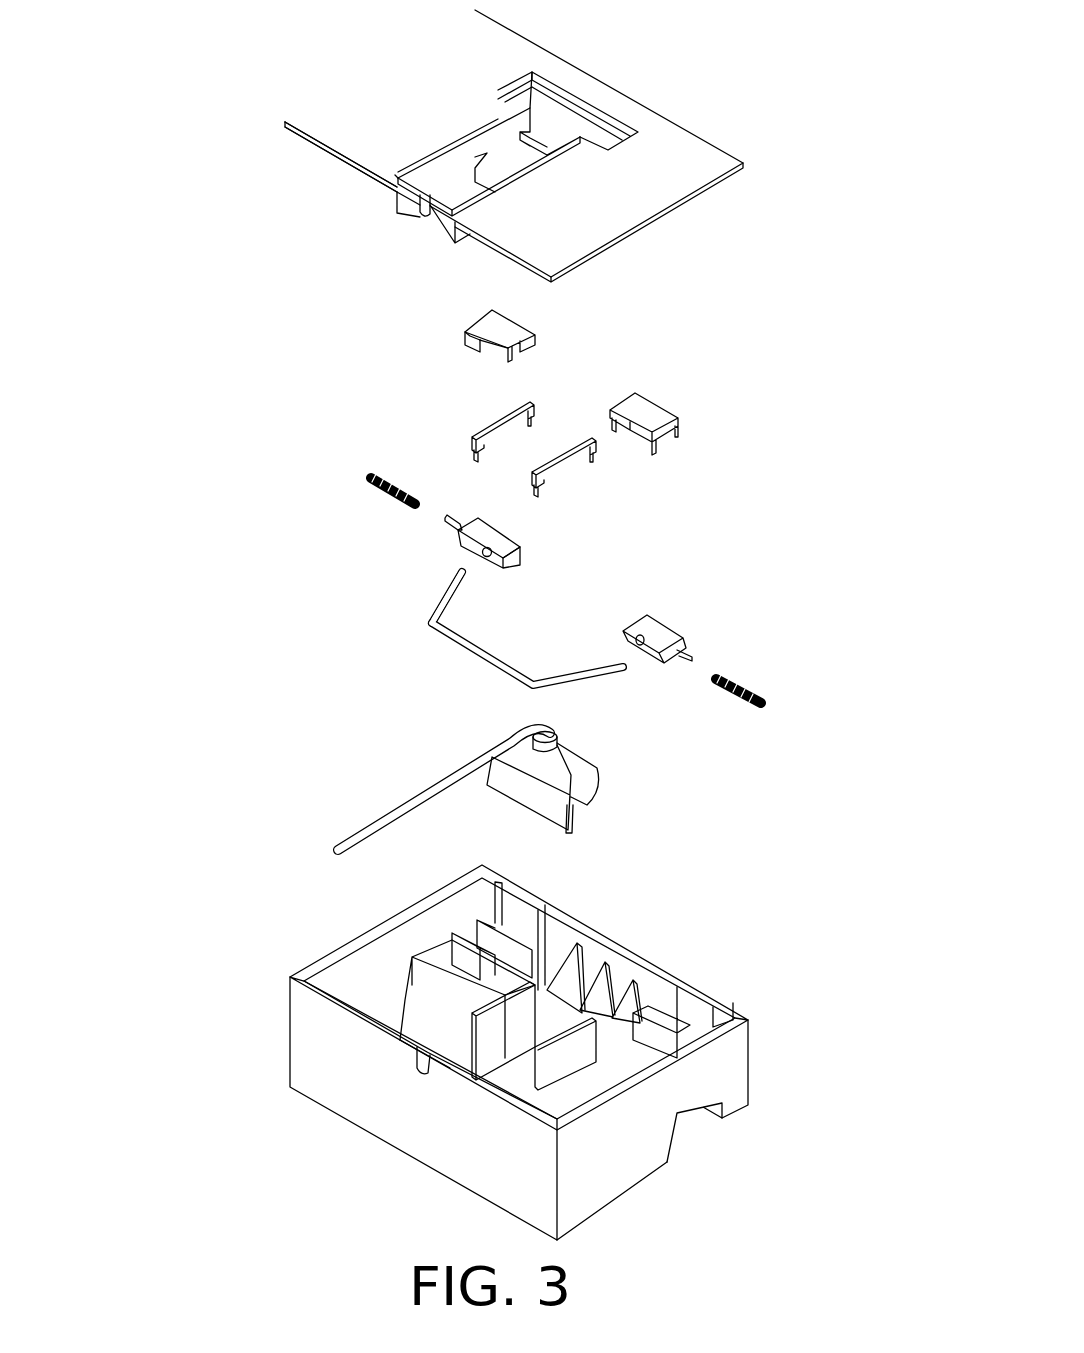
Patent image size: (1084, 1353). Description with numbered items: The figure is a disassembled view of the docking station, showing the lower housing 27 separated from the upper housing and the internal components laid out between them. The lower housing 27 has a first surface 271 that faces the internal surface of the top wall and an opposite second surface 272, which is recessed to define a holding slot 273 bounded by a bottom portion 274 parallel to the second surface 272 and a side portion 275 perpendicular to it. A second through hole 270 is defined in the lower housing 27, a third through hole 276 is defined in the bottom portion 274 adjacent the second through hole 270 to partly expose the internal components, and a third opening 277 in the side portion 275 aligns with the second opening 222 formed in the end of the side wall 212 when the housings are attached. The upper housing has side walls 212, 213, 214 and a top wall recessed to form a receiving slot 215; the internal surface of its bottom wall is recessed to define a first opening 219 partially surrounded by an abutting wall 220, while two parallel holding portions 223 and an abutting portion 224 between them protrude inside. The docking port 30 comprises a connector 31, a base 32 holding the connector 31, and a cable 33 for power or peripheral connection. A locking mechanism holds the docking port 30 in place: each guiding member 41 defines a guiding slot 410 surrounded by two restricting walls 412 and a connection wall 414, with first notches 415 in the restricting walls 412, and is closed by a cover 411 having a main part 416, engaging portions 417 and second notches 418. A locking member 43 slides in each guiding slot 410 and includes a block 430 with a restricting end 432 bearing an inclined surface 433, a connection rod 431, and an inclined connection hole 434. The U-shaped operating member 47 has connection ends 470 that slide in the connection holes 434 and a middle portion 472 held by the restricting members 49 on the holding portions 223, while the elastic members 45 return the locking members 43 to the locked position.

The lower housing 27 is at (687, 155).
The second through hole 270 is at (565, 122).
The first surface 271 is at (312, 143).
The second surface 272 is at (335, 115).
The holding slot 273 is at (515, 158).
The bottom portion 274 is at (472, 185).
The side portion 275 is at (398, 205).
The third through hole 276 is at (485, 158).
The third opening 277 is at (417, 220).
The main part 416 is at (508, 333).
The engaging portion 417 is at (470, 328).
The second notch 418 is at (495, 352).
The restricting member 49 is at (498, 417).
The cover 411 is at (645, 408).
The elastic member 45 is at (372, 477).
The block 430 is at (488, 532).
The connection rod 431 is at (443, 523).
The restricting end 432 is at (515, 553).
The inclined surface 433 is at (520, 560).
The operating member 47 is at (533, 618).
The connection end 470 is at (447, 602).
The middle portion 472 is at (520, 658).
The locking member 43 is at (668, 635).
The connection hole 434 is at (638, 645).
The docking port 30 is at (532, 788).
The cable 33 is at (533, 726).
The base 32 is at (583, 783).
The connector 31 is at (560, 815).
The guiding member 41 is at (562, 1020).
The guiding slot 410 is at (653, 1038).
The restricting wall 412 is at (477, 920).
The connection wall 414 is at (518, 978).
The first notch 415 is at (473, 958).
The first opening 219 is at (550, 992).
The abutting wall 220 is at (580, 997).
The side wall 212 is at (332, 1023).
The side wall 213 is at (605, 1192).
The side wall 214 is at (365, 965).
The receiving slot 215 is at (690, 1125).
The second opening 222 is at (417, 1058).
The holding portion 223 is at (563, 1043).
The abutting portion 224 is at (500, 1053).